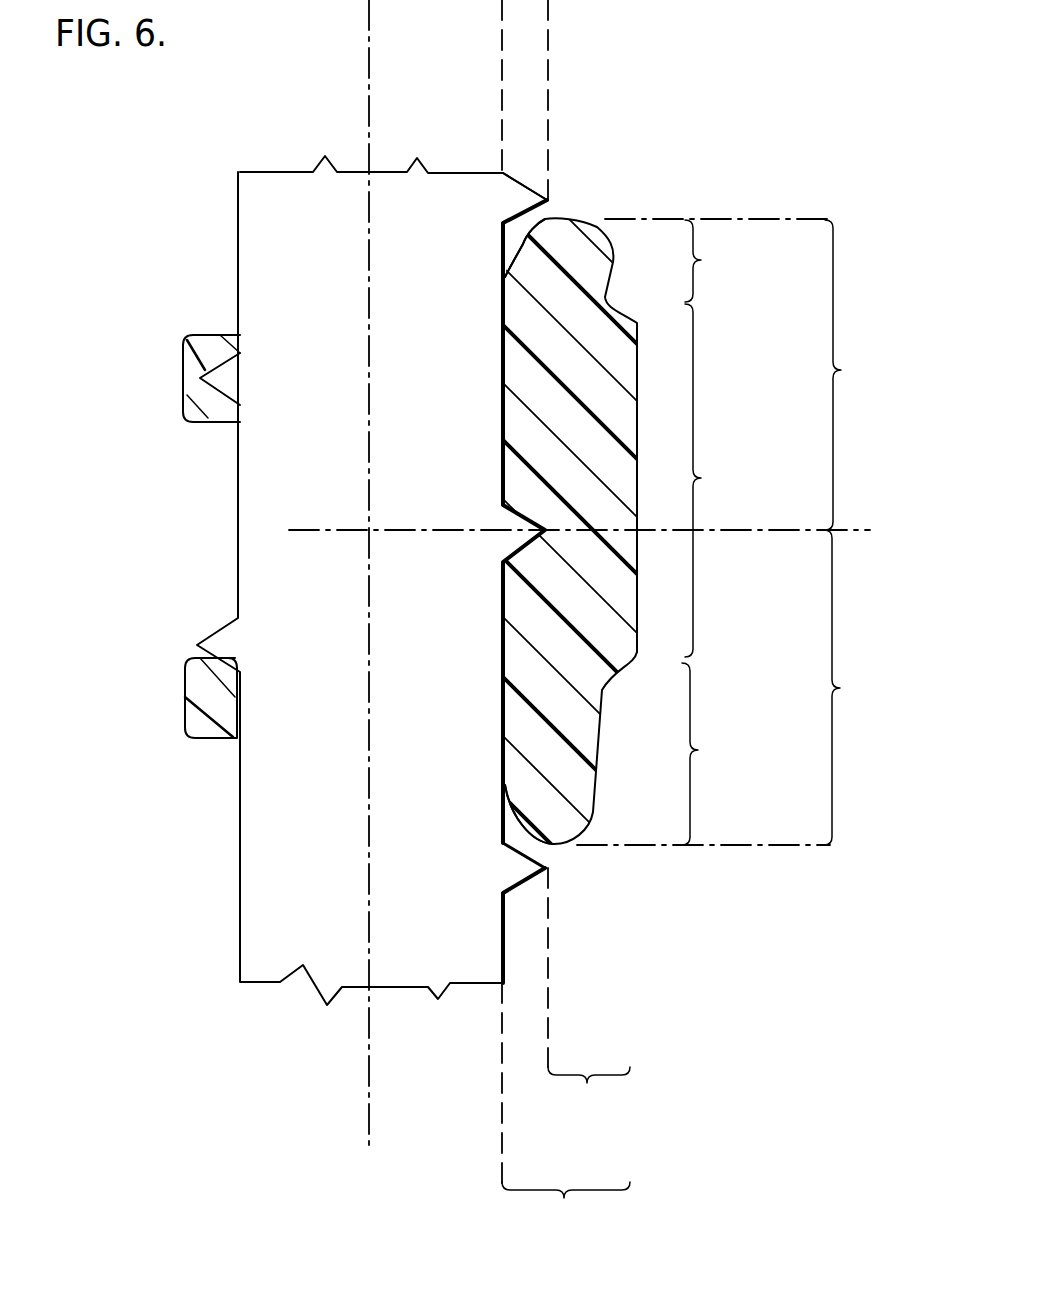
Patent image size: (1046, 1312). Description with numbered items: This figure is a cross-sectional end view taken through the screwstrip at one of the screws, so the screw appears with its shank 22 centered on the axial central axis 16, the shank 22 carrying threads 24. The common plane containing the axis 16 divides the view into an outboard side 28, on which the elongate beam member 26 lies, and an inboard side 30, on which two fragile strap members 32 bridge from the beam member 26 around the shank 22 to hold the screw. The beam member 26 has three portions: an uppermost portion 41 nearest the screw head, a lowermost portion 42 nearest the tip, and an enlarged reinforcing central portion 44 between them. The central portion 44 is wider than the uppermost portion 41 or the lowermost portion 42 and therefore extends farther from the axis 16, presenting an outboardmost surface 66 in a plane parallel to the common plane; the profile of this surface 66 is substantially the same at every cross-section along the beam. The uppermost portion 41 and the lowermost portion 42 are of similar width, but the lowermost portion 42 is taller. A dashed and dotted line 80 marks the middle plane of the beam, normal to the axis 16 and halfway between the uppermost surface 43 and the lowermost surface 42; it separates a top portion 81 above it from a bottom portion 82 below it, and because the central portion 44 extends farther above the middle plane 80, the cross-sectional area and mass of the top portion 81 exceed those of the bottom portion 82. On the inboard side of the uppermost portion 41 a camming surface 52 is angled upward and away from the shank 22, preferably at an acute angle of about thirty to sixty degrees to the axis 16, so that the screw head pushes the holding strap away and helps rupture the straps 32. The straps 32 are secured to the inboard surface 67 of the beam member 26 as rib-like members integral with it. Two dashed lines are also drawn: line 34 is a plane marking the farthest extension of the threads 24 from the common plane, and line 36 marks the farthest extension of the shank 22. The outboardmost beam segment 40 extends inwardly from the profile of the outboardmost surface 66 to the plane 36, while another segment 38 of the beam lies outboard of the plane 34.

The axial central axis 16 is at (372, 24).
The shank 22 is at (308, 187).
The threads 24 is at (525, 192).
The beam member 26 is at (560, 709).
The outboard side 28 is at (767, 572).
The inboard side 30 is at (89, 554).
The strap members 32 is at (183, 357).
The first dashed line 34 is at (550, 28).
The second dashed line 36 is at (505, 34).
The beam segment 38 is at (589, 1094).
The outboardmost beam segment 40 is at (566, 1209).
The uppermost portion 41 is at (710, 261).
The lowermost portion 42 is at (709, 754).
The uppermost surface 43 is at (550, 843).
The central portion 44 is at (710, 480).
The camming surface 52 is at (523, 243).
The outboardmost surface 66 is at (640, 549).
The inboard surface 67 is at (500, 640).
The middle plane 80 is at (317, 530).
The top portion 81 is at (851, 375).
The bottom portion 82 is at (850, 687).